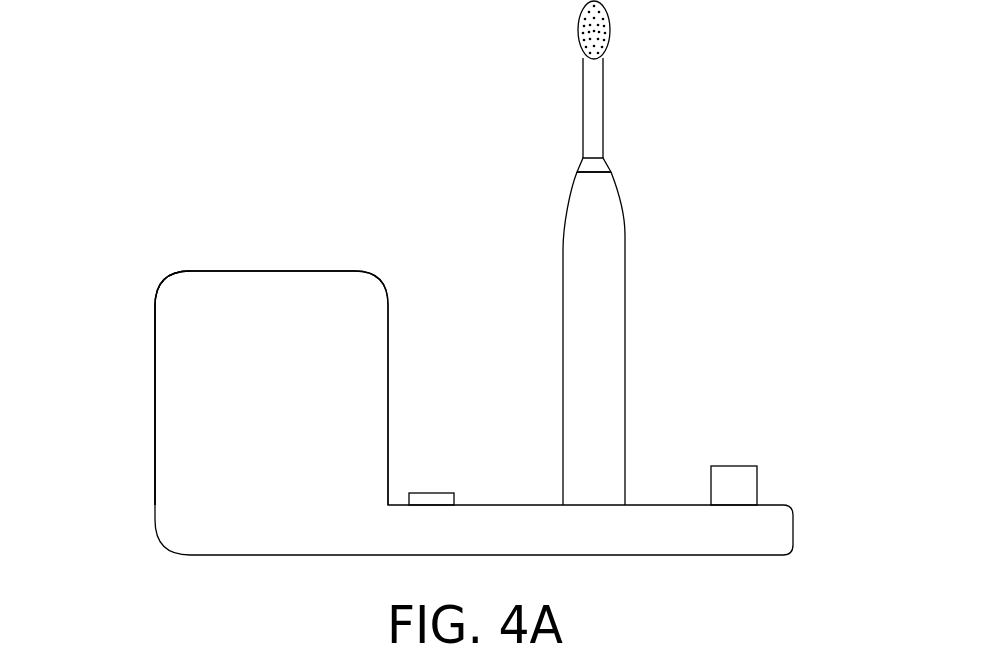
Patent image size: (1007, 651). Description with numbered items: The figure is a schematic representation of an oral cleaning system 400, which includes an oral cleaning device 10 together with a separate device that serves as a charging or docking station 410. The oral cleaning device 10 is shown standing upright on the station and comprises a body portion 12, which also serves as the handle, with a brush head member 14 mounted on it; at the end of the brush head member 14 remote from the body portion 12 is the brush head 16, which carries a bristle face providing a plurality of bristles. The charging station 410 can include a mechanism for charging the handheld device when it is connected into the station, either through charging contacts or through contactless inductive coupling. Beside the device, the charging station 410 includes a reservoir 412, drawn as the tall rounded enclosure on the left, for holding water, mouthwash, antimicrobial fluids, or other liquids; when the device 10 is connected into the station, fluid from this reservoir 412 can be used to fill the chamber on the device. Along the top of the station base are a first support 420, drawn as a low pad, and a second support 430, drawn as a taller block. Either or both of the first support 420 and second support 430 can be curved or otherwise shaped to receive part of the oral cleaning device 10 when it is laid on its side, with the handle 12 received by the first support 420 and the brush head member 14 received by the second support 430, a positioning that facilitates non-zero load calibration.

The oral cleaning system 400 is at (136, 145).
The charging station 410 is at (224, 257).
The reservoir 412 is at (157, 390).
The first support 420 is at (435, 493).
The second support 430 is at (734, 466).
The oral cleaning device 10 is at (438, 77).
The body portion 12 is at (558, 250).
The brush head member 14 is at (581, 109).
The brush head 16 is at (579, 38).